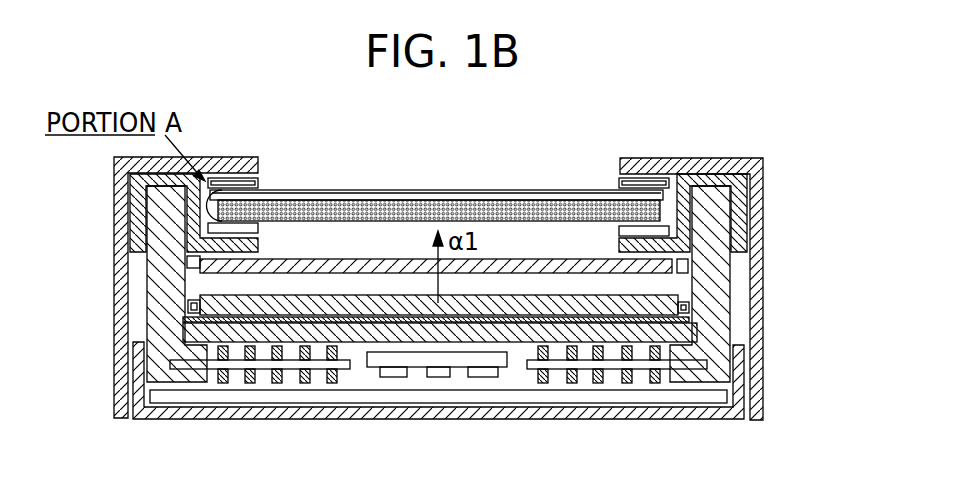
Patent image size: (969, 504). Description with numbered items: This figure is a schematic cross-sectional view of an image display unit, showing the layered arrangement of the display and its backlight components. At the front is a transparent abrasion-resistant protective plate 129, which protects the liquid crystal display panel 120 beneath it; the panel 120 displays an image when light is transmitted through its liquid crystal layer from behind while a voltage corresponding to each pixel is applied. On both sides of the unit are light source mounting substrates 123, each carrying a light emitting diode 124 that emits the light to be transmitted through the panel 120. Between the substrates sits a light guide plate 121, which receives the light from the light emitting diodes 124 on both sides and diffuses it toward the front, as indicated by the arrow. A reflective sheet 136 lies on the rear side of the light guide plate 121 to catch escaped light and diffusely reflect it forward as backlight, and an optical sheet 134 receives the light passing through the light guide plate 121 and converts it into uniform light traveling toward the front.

The liquid crystal display panel 120 is at (443, 208).
The light guide plate 121 is at (350, 303).
The light source mounting substrate 123 is at (150, 284).
The light emitting diode 124 is at (190, 306).
The transparent abrasion-resistant protective plate 129 is at (557, 192).
The optical sheet 134 is at (323, 266).
The reflective sheet 136 is at (523, 343).